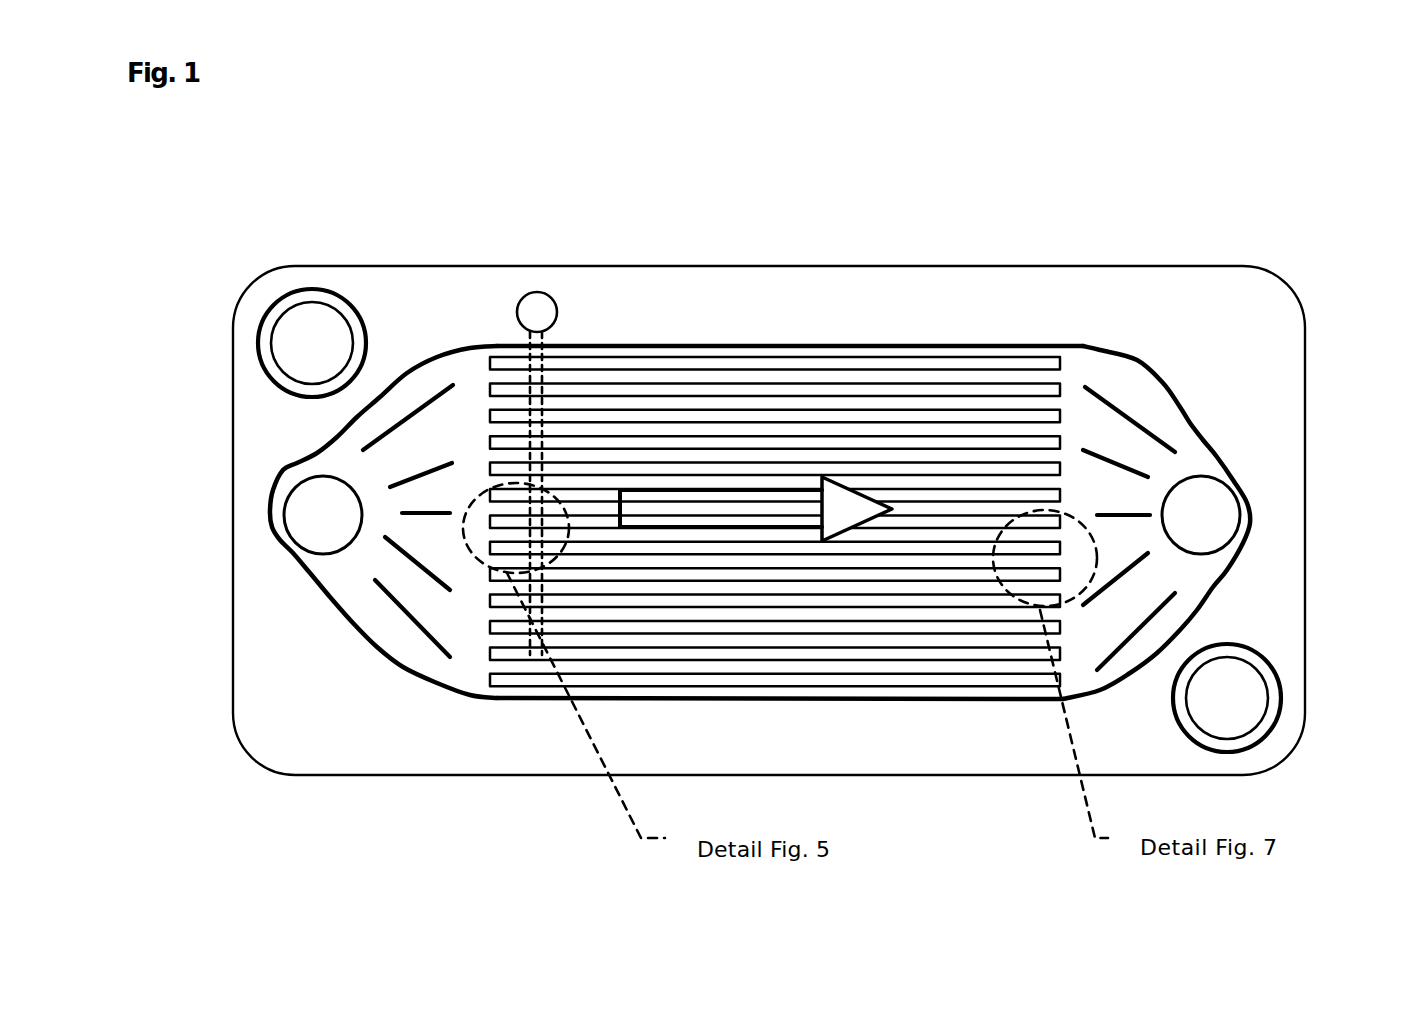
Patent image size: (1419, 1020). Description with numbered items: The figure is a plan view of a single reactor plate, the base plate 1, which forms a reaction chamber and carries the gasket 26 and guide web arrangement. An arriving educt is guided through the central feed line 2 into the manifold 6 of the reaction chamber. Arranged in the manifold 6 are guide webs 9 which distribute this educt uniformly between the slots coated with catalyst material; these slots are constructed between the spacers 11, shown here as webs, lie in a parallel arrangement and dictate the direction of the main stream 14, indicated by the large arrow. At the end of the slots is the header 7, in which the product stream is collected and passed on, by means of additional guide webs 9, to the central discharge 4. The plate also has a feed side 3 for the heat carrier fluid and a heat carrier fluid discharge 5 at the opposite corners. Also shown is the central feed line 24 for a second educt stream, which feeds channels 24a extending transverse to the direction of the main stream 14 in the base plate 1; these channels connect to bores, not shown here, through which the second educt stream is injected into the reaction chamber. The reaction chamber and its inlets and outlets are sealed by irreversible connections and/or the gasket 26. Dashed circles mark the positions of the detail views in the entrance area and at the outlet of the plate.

The base plate 1 is at (744, 572).
The central feed line 2 is at (260, 540).
The feed side for heat carrier fluid 3 is at (264, 292).
The central discharge 4 is at (1275, 568).
The heat carrier fluid discharge 5 is at (1286, 724).
The manifold 6 is at (676, 607).
The header 7 is at (1156, 452).
The guide webs 9 is at (392, 486).
The spacers 11 is at (713, 445).
The direction of main stream 14 is at (756, 509).
The central feed line for second educt stream 24 is at (578, 280).
The channels 24a is at (605, 480).
The gasket 26 is at (303, 465).